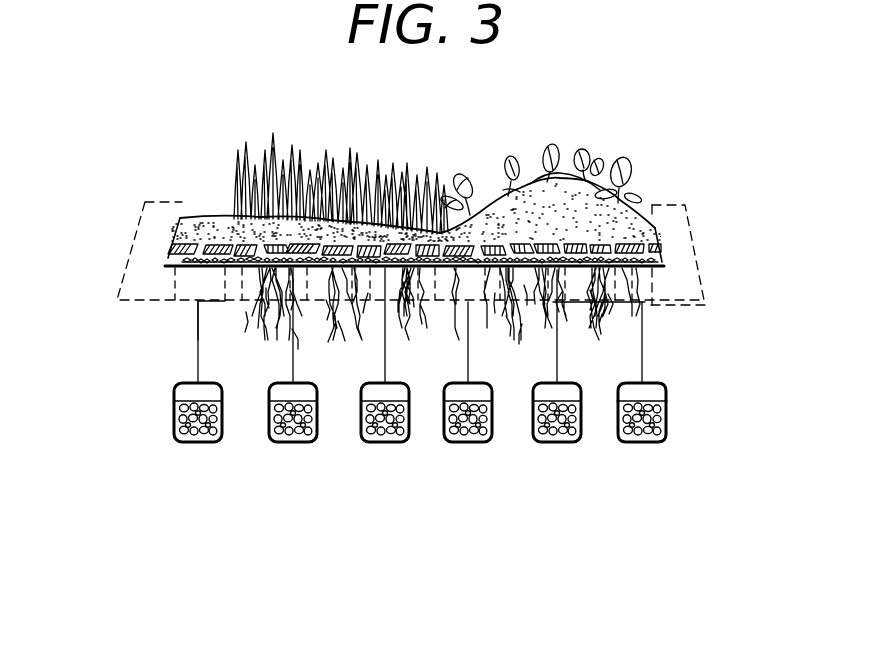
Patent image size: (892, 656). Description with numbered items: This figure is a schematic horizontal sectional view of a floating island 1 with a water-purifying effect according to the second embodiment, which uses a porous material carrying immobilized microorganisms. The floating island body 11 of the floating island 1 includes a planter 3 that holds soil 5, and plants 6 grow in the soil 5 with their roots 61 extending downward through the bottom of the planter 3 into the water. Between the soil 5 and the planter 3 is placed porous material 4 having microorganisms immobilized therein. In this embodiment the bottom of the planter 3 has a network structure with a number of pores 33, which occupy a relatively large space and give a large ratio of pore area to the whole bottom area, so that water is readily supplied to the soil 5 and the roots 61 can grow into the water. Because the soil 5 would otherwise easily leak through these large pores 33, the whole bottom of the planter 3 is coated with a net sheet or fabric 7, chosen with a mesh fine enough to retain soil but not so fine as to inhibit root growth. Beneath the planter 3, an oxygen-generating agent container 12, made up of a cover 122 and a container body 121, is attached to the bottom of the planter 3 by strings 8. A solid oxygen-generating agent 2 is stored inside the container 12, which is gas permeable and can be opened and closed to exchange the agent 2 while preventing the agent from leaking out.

The floating island 1 is at (660, 142).
The solid oxygen-generating agent 2 is at (617, 420).
The planter 3 is at (692, 216).
The porous material 4 is at (170, 248).
The soil 5 is at (200, 217).
The plants 6 is at (357, 160).
The fabric 7 is at (163, 268).
The strings 8 is at (645, 338).
The floating island body 11 is at (705, 262).
The oxygen-generating agent container 12 is at (467, 438).
The pores 33 is at (190, 302).
The roots 61 is at (511, 310).
The container body 121 is at (645, 448).
The cover 122 is at (663, 395).